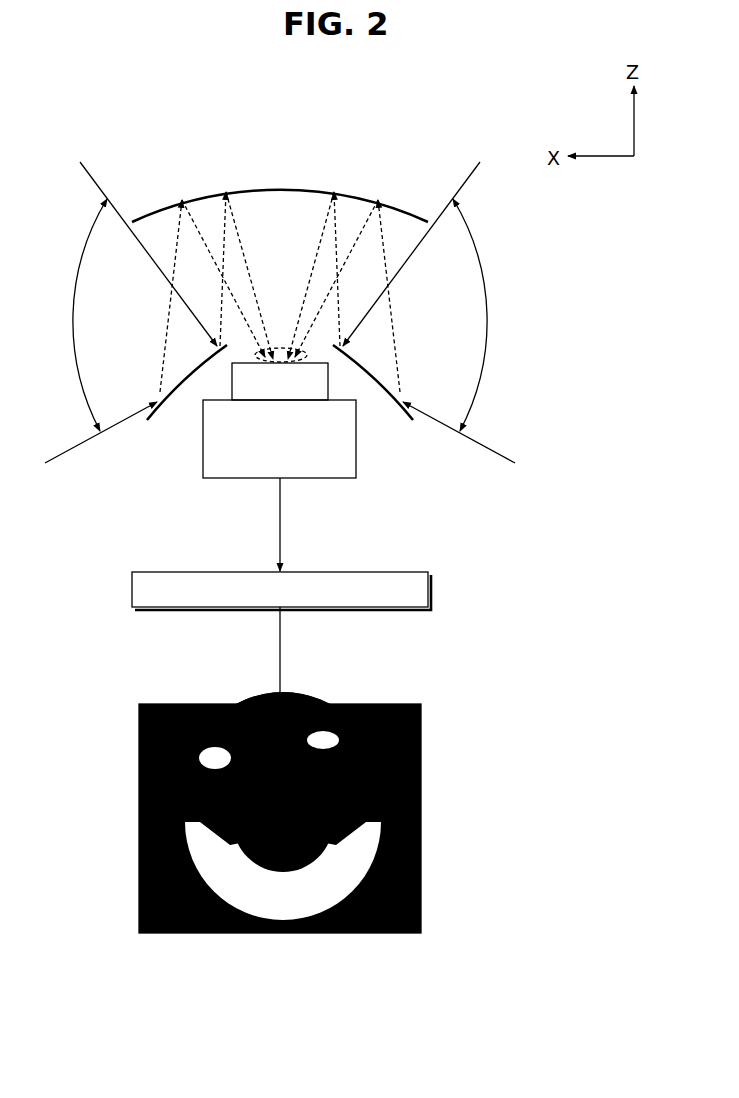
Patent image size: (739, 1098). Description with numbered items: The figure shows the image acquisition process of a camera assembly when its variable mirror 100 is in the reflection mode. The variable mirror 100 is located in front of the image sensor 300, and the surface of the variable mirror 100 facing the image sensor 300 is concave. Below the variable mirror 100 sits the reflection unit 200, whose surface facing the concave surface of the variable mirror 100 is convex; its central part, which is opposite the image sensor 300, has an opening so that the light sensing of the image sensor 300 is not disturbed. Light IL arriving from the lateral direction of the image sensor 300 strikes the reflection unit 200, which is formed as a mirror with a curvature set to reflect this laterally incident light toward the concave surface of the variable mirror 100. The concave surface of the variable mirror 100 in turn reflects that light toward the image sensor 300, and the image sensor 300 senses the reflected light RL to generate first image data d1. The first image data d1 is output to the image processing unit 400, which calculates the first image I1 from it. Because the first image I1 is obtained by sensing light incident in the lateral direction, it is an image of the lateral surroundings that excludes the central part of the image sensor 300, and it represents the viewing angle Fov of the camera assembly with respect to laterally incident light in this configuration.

The variable mirror 100 is at (313, 190).
The reflection unit 200 is at (182, 389).
The image sensor 300 is at (350, 480).
The image processing unit 400 is at (387, 571).
The first image I1 is at (423, 795).
The light IL is at (90, 175).
The light reflected by the variable mirror RL is at (280, 343).
The field of view Fov is at (276, 315).
The first image data d1 is at (266, 524).